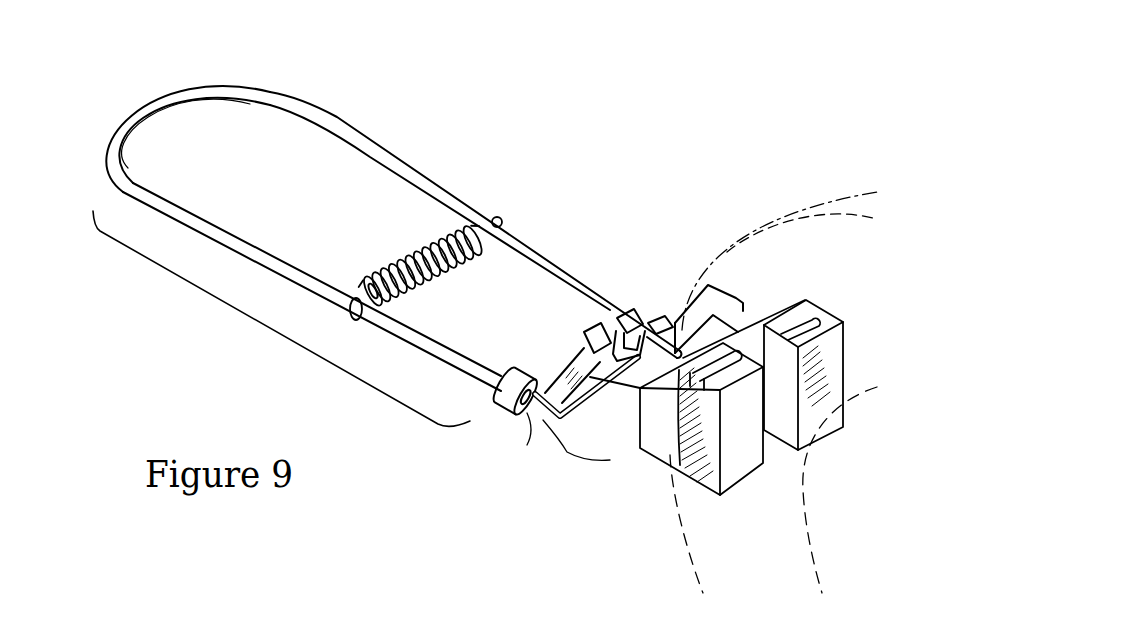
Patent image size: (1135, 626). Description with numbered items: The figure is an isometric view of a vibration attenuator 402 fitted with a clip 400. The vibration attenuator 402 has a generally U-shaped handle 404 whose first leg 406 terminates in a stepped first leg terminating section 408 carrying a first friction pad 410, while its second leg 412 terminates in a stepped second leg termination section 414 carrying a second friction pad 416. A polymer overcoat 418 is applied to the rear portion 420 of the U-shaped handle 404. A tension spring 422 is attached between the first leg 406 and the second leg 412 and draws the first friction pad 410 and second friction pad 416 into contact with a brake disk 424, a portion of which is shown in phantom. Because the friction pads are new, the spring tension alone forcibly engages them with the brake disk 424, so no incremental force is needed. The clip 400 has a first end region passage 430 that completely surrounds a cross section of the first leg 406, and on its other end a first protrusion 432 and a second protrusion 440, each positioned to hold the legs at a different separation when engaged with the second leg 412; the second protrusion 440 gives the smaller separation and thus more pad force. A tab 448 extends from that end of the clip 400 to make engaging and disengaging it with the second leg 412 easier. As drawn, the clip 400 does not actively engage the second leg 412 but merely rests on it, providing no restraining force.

The clip 400 is at (540, 352).
The vibration attenuator 402 is at (598, 158).
The U-shaped handle 404 is at (357, 122).
The first leg 406 is at (316, 275).
The first leg terminating section 408 is at (565, 452).
The first friction pad 410 is at (662, 450).
The second leg 412 is at (522, 244).
The second leg termination section 414 is at (708, 283).
The second friction pad 416 is at (798, 305).
The polymer overcoat 418 is at (630, 310).
The rear portion 420 is at (268, 329).
The tension spring 422 is at (412, 258).
The brake disk 424 is at (830, 208).
The first end region passage 430 is at (537, 417).
The first protrusion 432 is at (637, 312).
The second protrusion 440 is at (580, 325).
The tab 448 is at (661, 321).